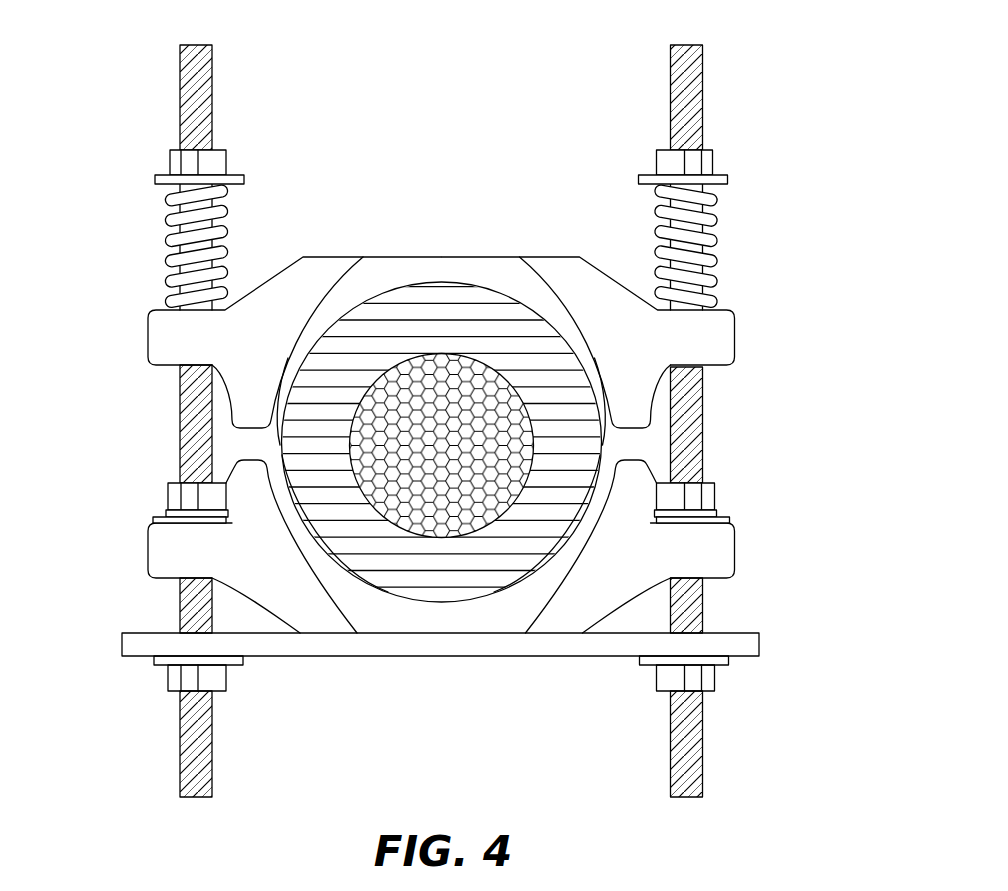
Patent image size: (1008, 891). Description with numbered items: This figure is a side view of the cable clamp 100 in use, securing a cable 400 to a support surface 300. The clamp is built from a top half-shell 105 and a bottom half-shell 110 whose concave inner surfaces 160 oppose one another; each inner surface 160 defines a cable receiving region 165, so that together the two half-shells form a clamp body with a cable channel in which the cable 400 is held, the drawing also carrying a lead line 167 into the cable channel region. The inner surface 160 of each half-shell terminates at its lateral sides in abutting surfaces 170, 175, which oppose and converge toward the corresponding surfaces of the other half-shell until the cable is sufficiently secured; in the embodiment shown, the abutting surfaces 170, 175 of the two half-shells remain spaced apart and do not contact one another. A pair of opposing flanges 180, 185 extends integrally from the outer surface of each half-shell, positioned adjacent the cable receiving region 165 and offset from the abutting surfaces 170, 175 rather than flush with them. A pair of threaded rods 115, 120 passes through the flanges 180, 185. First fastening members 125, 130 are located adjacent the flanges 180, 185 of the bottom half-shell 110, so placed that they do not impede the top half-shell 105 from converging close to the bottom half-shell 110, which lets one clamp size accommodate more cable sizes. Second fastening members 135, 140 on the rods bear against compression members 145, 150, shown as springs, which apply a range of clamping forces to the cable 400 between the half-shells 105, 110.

The cable clamp 100 is at (446, 98).
The top half-shell 105 is at (370, 284).
The bottom half-shell 110 is at (478, 613).
The threaded rod 115 is at (690, 88).
The threaded rod 120 is at (182, 75).
The first fastening member 125 is at (718, 498).
The first fastening member 130 is at (168, 500).
The second fastening member 135 is at (700, 165).
The second fastening member 140 is at (175, 167).
The compression member 145 is at (705, 255).
The compression member 150 is at (175, 240).
The inner surface 160 is at (486, 288).
The cable receiving region 165 is at (357, 528).
The insulation layer 167 is at (541, 364).
The abutting surface 170 is at (650, 420).
The abutting surface 175 is at (230, 437).
The opposing flange 180 is at (713, 342).
The opposing flange 185 is at (180, 350).
The support surface 300 is at (759, 640).
The cable 400 is at (443, 563).